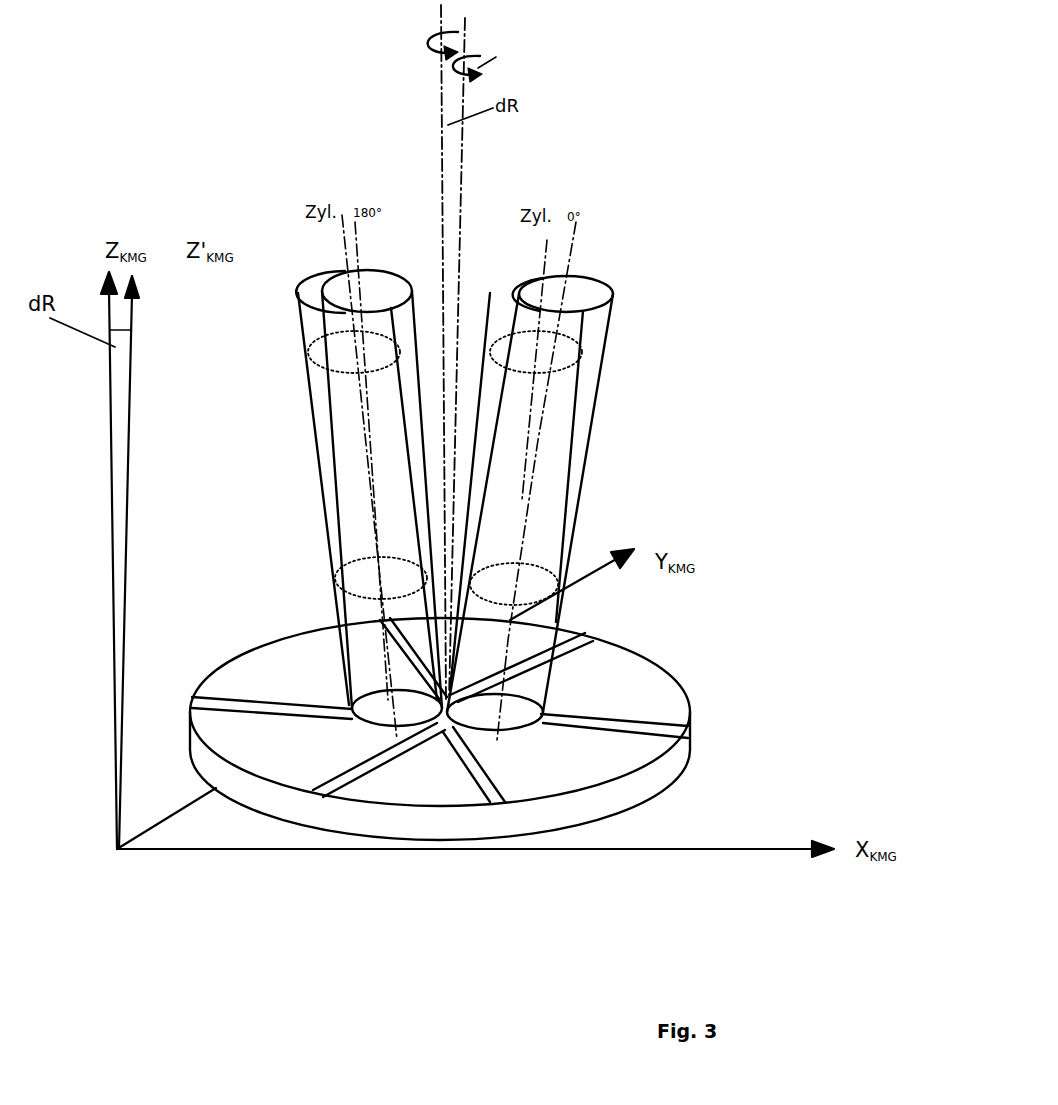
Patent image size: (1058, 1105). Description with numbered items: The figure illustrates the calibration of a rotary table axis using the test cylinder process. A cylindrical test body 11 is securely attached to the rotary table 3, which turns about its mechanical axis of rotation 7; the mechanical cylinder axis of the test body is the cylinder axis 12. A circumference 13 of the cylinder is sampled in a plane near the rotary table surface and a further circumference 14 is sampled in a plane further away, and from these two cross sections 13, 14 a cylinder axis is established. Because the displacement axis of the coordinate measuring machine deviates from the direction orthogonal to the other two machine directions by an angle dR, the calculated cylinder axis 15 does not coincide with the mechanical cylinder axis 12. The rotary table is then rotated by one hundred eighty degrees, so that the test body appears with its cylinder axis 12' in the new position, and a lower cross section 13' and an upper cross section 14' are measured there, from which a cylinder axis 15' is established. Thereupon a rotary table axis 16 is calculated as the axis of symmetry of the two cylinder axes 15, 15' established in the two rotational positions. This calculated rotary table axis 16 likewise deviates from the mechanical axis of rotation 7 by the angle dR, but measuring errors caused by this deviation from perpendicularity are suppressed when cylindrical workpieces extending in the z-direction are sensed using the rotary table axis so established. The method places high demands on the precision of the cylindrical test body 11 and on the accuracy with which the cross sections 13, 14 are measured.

The rotary table 3 is at (690, 698).
The mechanical axis of rotation 7 is at (443, 117).
The cylindrical test body 11 is at (498, 286).
The cylinder axis 12 is at (526, 332).
The cylinder axis in the rotated position 12' is at (333, 477).
The circumference 13 is at (563, 552).
The lower cross section 13' is at (339, 587).
The further circumference 14 is at (588, 369).
The upper cross section 14' is at (317, 368).
The calculated cylinder axis 15 is at (579, 481).
The cylinder axis established in the rotated position 15' is at (389, 458).
The rotary table axis 16 is at (462, 150).